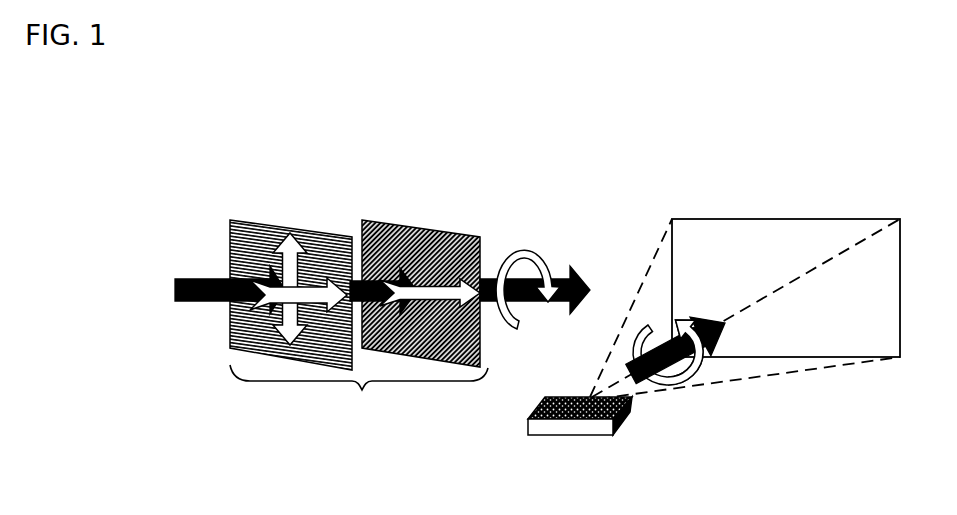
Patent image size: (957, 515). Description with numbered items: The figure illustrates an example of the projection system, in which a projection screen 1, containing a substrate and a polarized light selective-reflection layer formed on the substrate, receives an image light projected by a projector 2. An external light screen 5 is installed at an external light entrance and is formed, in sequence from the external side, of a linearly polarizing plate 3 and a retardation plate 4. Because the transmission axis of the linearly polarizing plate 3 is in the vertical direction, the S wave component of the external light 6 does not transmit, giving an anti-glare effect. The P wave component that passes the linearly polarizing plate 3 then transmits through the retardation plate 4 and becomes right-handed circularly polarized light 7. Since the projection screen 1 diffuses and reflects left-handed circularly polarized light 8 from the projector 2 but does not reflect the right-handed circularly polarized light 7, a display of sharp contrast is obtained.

The projection screen 1 is at (767, 237).
The projector 2 is at (627, 428).
The linearly polarizing plate 3 is at (263, 230).
The retardation plate 4 is at (380, 227).
The external light screen 5 is at (359, 394).
The external light 6 is at (197, 277).
The right-handed circularly polarized light 7 is at (568, 278).
The left-handed circularly polarized light 8 is at (723, 333).